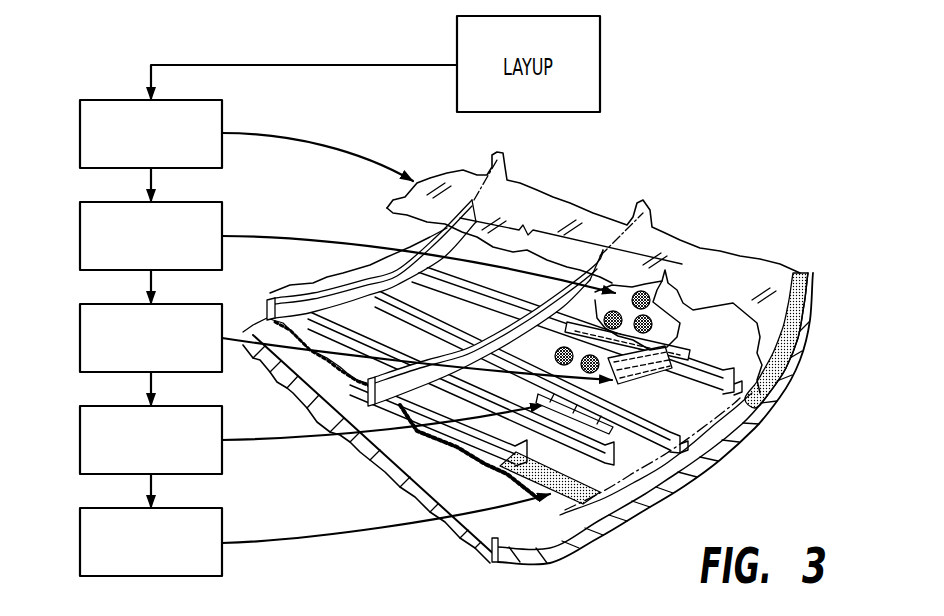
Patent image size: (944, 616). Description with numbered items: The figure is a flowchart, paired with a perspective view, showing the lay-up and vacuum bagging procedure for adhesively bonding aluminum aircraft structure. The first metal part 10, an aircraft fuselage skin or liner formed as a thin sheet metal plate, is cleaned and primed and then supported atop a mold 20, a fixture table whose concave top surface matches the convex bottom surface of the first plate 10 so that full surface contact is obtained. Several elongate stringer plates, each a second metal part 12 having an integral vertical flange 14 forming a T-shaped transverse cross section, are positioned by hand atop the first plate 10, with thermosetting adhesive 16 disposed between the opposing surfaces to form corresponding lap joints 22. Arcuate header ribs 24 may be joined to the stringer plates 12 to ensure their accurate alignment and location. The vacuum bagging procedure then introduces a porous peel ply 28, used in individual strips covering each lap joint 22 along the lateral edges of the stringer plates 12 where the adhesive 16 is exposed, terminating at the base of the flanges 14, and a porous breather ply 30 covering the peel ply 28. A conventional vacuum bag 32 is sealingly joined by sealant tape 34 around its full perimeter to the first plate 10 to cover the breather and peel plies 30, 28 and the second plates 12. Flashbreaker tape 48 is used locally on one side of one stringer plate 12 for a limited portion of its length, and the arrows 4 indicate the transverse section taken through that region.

The section indicator arrows (FIG. 4) 4 is at (620, 390).
The first metal part 10 is at (612, 512).
The second metal part 12 is at (787, 418).
The vertical flange 14 is at (481, 463).
The thermosetting adhesive 16 is at (98, 508).
The mold 20 is at (488, 561).
The lap joint 22 is at (498, 481).
The arcuate header rib 24 is at (432, 368).
The peel ply 28 is at (98, 304).
The breather ply 30 is at (98, 202).
The vacuum bag 32 is at (98, 100).
The sealant tape 34 is at (805, 273).
The flashbreaker tape 48 is at (98, 406).